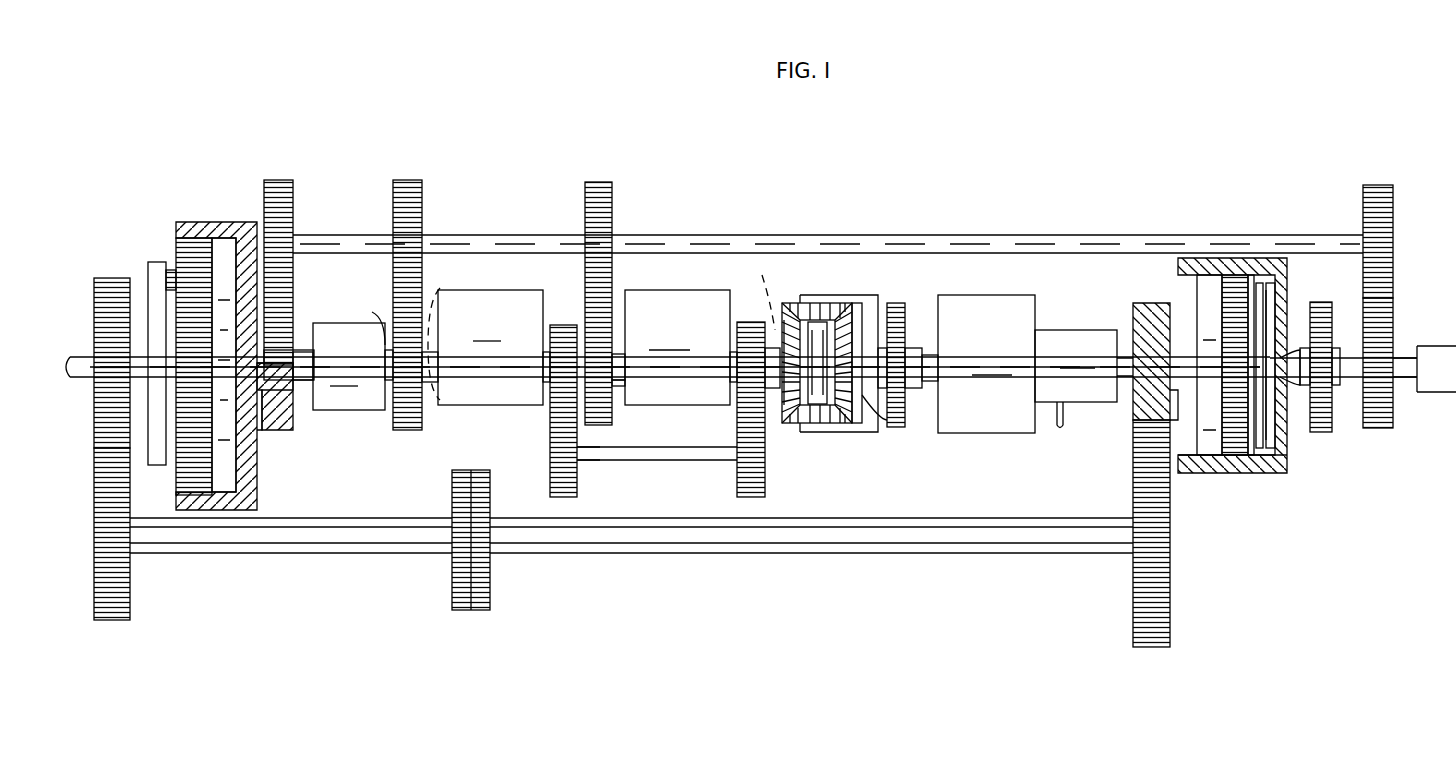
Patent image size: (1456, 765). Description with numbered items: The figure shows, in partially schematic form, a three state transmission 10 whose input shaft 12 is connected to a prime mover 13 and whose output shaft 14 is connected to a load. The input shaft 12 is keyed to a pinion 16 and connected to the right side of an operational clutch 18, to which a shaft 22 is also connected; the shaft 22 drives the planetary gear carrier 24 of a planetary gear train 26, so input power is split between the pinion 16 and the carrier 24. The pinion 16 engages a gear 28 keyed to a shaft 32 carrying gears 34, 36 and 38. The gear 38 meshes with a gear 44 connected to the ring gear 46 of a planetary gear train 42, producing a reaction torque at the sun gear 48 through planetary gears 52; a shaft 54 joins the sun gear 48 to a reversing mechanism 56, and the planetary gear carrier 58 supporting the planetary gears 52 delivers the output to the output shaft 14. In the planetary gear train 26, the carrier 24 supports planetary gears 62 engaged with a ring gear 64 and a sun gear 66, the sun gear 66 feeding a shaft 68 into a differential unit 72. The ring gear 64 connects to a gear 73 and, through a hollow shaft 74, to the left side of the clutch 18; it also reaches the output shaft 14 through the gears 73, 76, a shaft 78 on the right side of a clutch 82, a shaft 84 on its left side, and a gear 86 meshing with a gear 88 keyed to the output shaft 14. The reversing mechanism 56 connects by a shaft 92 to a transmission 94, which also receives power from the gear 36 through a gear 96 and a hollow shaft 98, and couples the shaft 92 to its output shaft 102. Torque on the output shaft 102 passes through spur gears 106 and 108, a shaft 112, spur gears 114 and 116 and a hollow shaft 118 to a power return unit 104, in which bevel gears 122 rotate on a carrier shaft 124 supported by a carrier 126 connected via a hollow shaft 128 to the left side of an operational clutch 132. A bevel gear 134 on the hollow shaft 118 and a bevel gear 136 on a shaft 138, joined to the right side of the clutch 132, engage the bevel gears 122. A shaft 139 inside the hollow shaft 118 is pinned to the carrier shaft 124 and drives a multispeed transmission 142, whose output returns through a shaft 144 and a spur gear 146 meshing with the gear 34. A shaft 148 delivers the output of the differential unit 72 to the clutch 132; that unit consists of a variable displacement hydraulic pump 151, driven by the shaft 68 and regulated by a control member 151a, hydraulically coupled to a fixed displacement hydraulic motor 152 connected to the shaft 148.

The transmission 10 is at (364, 606).
The input shaft 12 is at (1400, 358).
The prime mover 13 is at (1410, 388).
The output shaft 14 is at (84, 377).
The pinion 16 is at (1393, 420).
The operational clutch 18 is at (1335, 432).
The shaft 22 is at (1282, 360).
The planetary gear carrier 24 is at (1265, 432).
The planetary gear train 26 is at (1245, 478).
The gear 28 is at (1393, 215).
The shaft 32 is at (1105, 235).
The gear 34 is at (612, 200).
The gear 36 is at (422, 200).
The gear 38 is at (293, 195).
The planetary gear train 42 is at (232, 230).
The gear 44 is at (293, 430).
The ring gear 46 is at (200, 222).
The sun gear 48 is at (270, 350).
The planetary gears 52 is at (176, 250).
The shaft 54 is at (308, 382).
The reversing mechanism 56 is at (349, 366).
The planetary gear carrier 58 is at (150, 276).
The planetary gears 62 is at (1210, 472).
The ring gear 64 is at (1256, 458).
The sun gear 66 is at (1232, 340).
The shaft 68 is at (1212, 325).
The differential unit 72 is at (1014, 438).
The gear 73 is at (1133, 320).
The hollow shaft 74 is at (1302, 400).
The gear 76 is at (1170, 632).
The shaft 78 is at (815, 554).
The clutch 82 is at (475, 612).
The shaft 84 is at (262, 554).
The gear 86 is at (130, 602).
The gear 88 is at (96, 422).
The shaft 92 is at (413, 333).
The transmission 94 is at (490, 347).
The gear 96 is at (422, 412).
The hollow shaft 98 is at (432, 385).
The output shaft 102 is at (542, 385).
The power return unit 104 is at (864, 294).
The spur gear 106 is at (562, 325).
The spur gear 108 is at (550, 462).
The shaft 112 is at (605, 462).
The spur gear 114 is at (737, 482).
The spur gear 116 is at (745, 322).
The hollow shaft 118 is at (772, 395).
The bevel gears 122 is at (790, 303).
The carrier shaft 124 is at (830, 395).
The carrier 126 is at (840, 432).
The hollow shaft 128 is at (890, 345).
The operational clutch 132 is at (905, 420).
The bevel gear 134 is at (782, 320).
The bevel gear 136 is at (888, 335).
The shaft 138 is at (878, 430).
The shaft 139 is at (752, 292).
The transmission 142 is at (677, 347).
The shaft 144 is at (620, 388).
The spur gear 146 is at (614, 330).
The shaft 148 is at (925, 360).
The variable displacement hydraulic pump 151 is at (1076, 366).
The control member 151a is at (1062, 426).
The fixed displacement hydraulic motor 152 is at (986, 364).